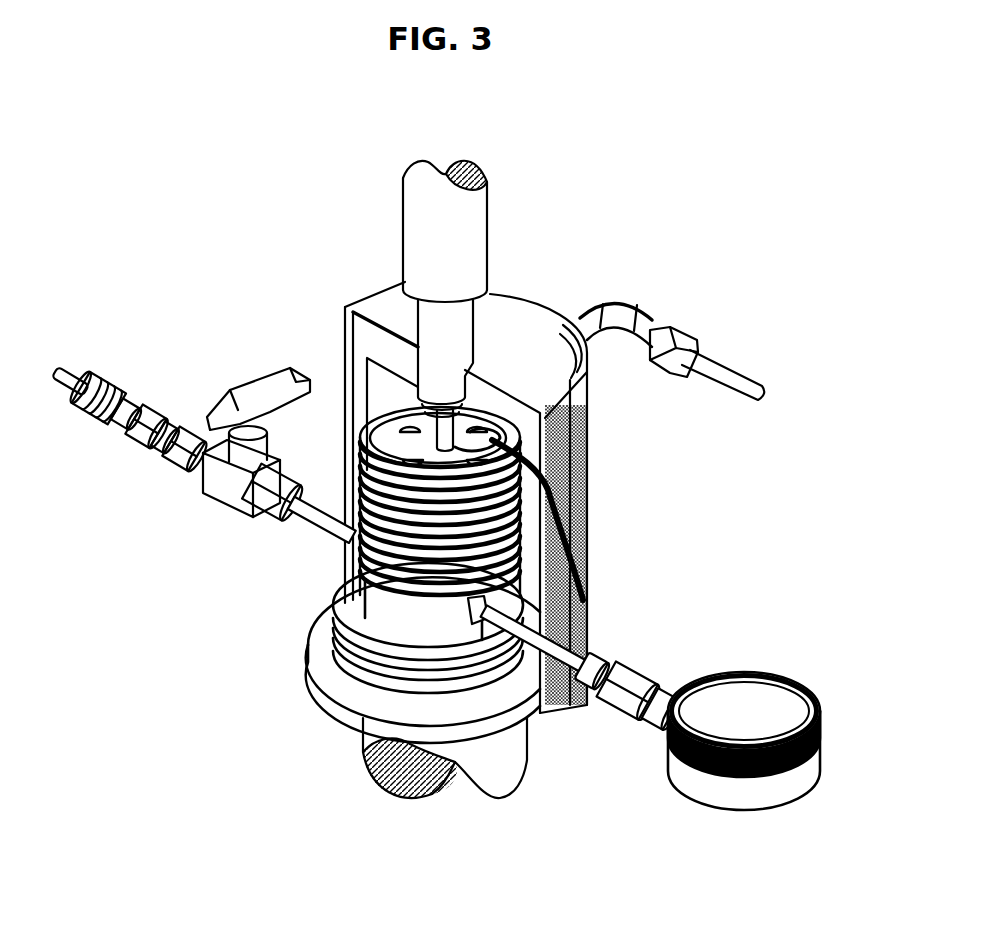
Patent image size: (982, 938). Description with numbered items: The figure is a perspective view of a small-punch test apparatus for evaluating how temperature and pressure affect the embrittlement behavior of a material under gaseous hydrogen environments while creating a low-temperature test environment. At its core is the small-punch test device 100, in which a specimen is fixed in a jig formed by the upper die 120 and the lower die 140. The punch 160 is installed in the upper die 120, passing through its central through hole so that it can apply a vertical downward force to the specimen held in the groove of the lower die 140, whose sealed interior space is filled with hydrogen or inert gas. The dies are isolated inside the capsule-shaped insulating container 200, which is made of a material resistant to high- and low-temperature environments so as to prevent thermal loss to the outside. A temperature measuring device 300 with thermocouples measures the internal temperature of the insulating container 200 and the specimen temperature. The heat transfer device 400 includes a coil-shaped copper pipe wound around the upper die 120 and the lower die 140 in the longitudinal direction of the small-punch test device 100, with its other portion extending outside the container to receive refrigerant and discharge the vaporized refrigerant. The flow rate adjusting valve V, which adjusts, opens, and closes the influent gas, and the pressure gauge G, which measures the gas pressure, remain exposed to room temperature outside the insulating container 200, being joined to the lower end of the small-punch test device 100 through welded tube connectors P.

The small-punch test device 100 is at (243, 687).
The upper die 120 is at (390, 447).
The lower die 140 is at (372, 603).
The punch 160 is at (418, 237).
The insulating container 200 is at (530, 312).
The temperature measuring device 300 is at (587, 478).
The heat transfer device 400 is at (587, 613).
The flow rate adjusting valve V is at (258, 395).
The pressure gauge G is at (745, 692).
The tube connector P is at (567, 700).